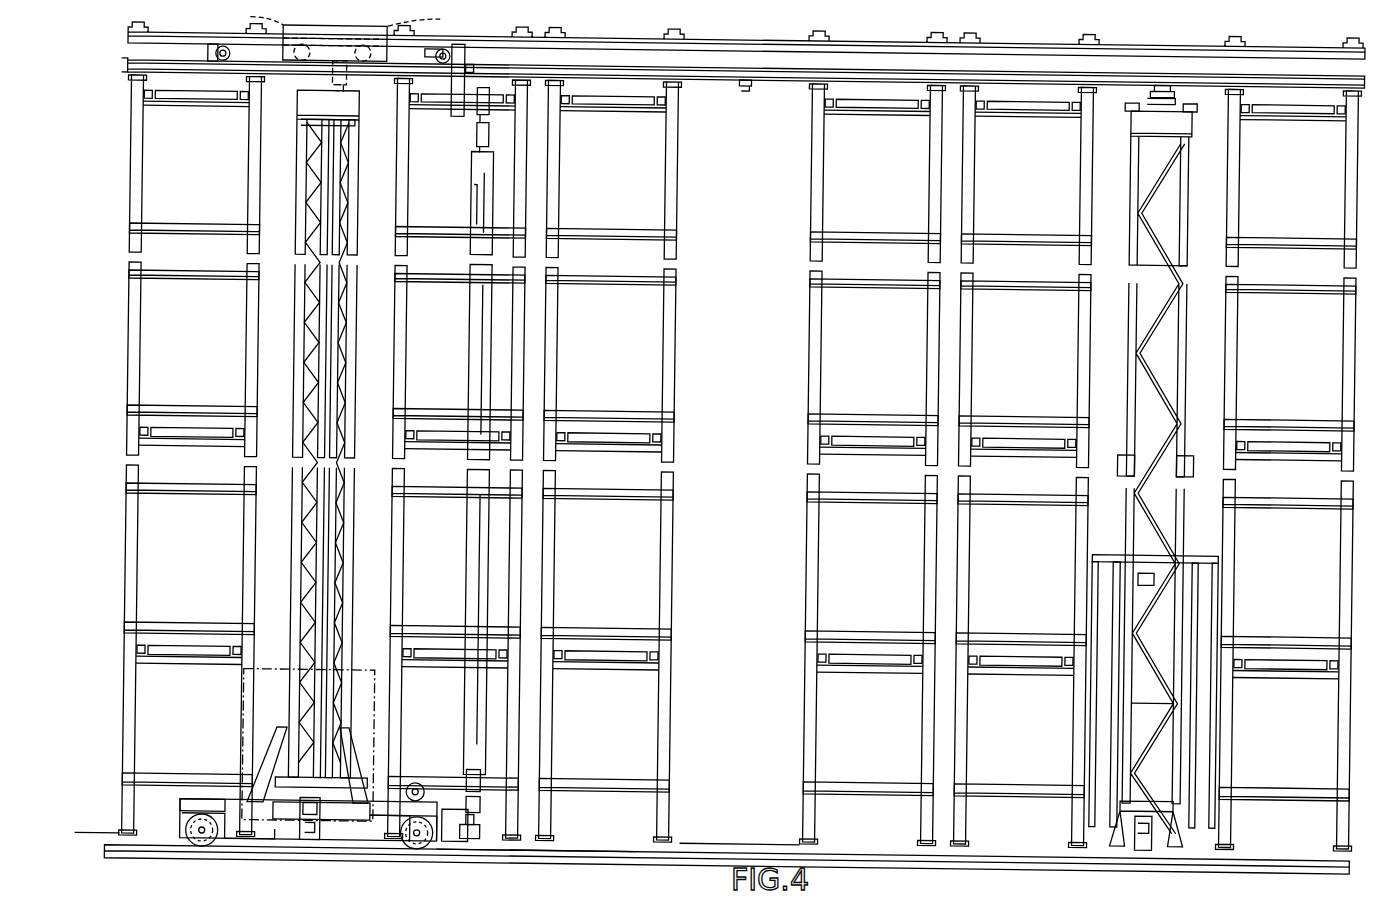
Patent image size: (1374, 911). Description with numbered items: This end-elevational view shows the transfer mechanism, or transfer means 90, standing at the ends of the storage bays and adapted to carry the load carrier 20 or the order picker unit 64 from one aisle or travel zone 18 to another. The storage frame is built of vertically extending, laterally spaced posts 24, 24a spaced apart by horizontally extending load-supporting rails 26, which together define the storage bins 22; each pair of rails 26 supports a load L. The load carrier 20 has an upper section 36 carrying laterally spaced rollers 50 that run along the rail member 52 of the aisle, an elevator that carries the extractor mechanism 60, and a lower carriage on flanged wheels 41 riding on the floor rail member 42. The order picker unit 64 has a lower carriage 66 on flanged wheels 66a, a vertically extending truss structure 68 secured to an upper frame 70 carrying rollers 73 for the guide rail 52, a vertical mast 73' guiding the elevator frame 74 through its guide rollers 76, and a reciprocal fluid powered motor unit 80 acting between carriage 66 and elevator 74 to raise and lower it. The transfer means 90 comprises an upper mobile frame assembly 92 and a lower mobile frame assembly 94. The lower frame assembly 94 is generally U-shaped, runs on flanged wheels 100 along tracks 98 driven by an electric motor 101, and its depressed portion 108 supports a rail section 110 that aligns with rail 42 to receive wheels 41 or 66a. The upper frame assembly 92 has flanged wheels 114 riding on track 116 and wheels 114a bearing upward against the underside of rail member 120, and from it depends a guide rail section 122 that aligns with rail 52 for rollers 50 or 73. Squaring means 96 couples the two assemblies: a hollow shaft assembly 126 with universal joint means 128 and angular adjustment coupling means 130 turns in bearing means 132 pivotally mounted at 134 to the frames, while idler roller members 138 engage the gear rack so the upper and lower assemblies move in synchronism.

The aisle or travel zone 18 is at (687, 845).
The load carrier 20 is at (356, 315).
The storage bin 22 is at (1032, 711).
The post 24 is at (1243, 352).
The post 24a is at (1265, 388).
The load-supporting rail 26 is at (1295, 783).
The upper section 36 is at (348, 120).
The flanged wheel 41 is at (317, 818).
The rail member 42 is at (735, 835).
The roller 50 is at (355, 730).
The rail member 52 is at (1162, 77).
The extractor mechanism 60 is at (380, 745).
The order picker unit 64 is at (1202, 391).
The lower carriage 66 is at (1165, 790).
The flanged wheel 66a is at (1150, 818).
The truss structure 68 is at (1188, 348).
The upper frame 70 is at (1168, 110).
The roller 73 is at (1160, 119).
The vertical mast 73' is at (1158, 445).
The elevator frame 74 is at (1218, 556).
The guide roller 76 is at (1197, 548).
The fluid powered motor unit 80 is at (1155, 696).
The transfer means 90 is at (385, 848).
The upper mobile frame assembly 92 is at (434, 44).
The lower mobile frame assembly 94 is at (182, 810).
The squaring means 96 is at (498, 357).
The track 98 is at (578, 850).
The flanged wheel 100 is at (420, 845).
The electric motor 101 is at (425, 778).
The depressed portion 108 is at (243, 848).
The rail section 110 is at (315, 823).
The flanged wheel 114 is at (462, 46).
The flanged wheel 114a is at (333, 32).
The track 116 is at (125, 68).
The rail or track member 120 is at (245, 36).
The guide rail section 122 is at (343, 40).
The shaft assembly 126 is at (470, 586).
The universal joint means 128 is at (488, 765).
The angular adjustment coupling means 130 is at (490, 790).
The bearing means 132 is at (480, 840).
The pivot mounting 134 is at (493, 808).
The idler roller member 138 is at (468, 842).
The load L is at (368, 662).